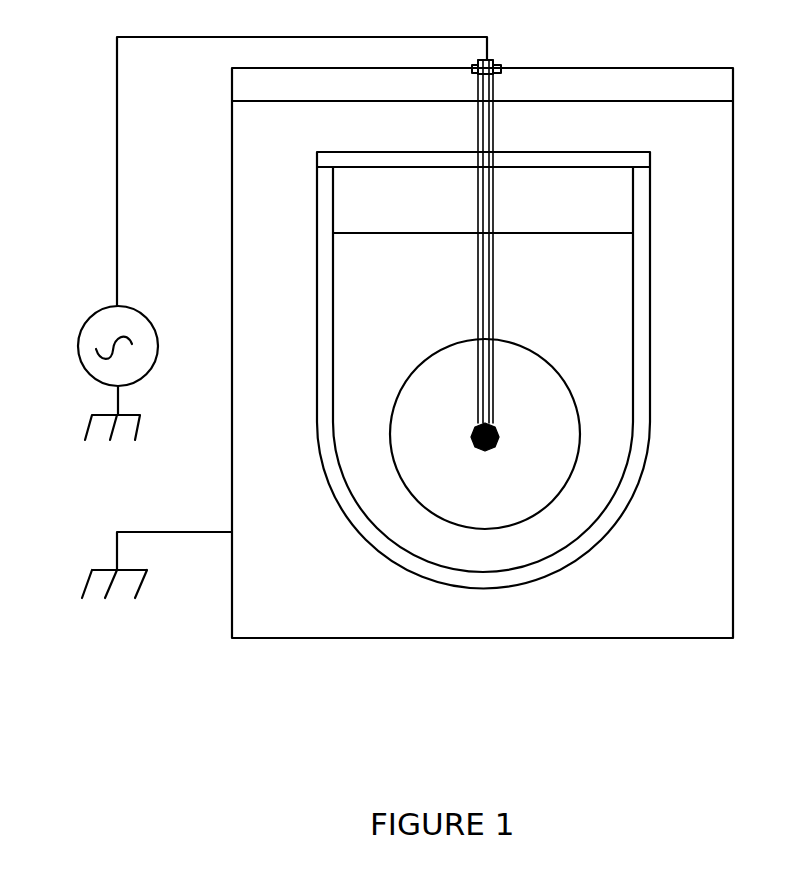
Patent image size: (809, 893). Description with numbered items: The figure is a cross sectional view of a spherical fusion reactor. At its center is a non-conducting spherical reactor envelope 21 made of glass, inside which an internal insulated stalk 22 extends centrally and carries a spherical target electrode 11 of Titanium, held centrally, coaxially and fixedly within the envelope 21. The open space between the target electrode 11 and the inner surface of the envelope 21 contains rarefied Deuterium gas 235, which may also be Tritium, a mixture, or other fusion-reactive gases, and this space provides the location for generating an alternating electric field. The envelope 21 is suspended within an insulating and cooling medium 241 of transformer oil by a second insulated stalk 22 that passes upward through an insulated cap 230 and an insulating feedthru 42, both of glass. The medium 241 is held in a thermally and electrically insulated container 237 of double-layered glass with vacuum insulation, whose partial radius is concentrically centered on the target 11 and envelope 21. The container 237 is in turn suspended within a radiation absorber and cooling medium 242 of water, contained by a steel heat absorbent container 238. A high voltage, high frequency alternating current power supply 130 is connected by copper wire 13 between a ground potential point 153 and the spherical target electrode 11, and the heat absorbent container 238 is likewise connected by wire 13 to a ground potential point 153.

The spherical target electrode 11 is at (474, 421).
The wire 13 is at (100, 122).
The spherical reactor envelope 21 is at (412, 370).
The insulated stalk 22 is at (497, 388).
The insulating feedthru 42 is at (502, 63).
The alternating current source/power supply 130 is at (85, 300).
The ground potential point 153 is at (97, 452).
The insulated cap 230 is at (561, 353).
The rarefied Deuterium gas 235 is at (545, 412).
The thermally and electrically insulated container 237 is at (657, 393).
The heat absorbent container 238 is at (738, 455).
The insulating and cooling medium 241 is at (608, 305).
The radiation absorber and cooling medium 242 is at (697, 167).